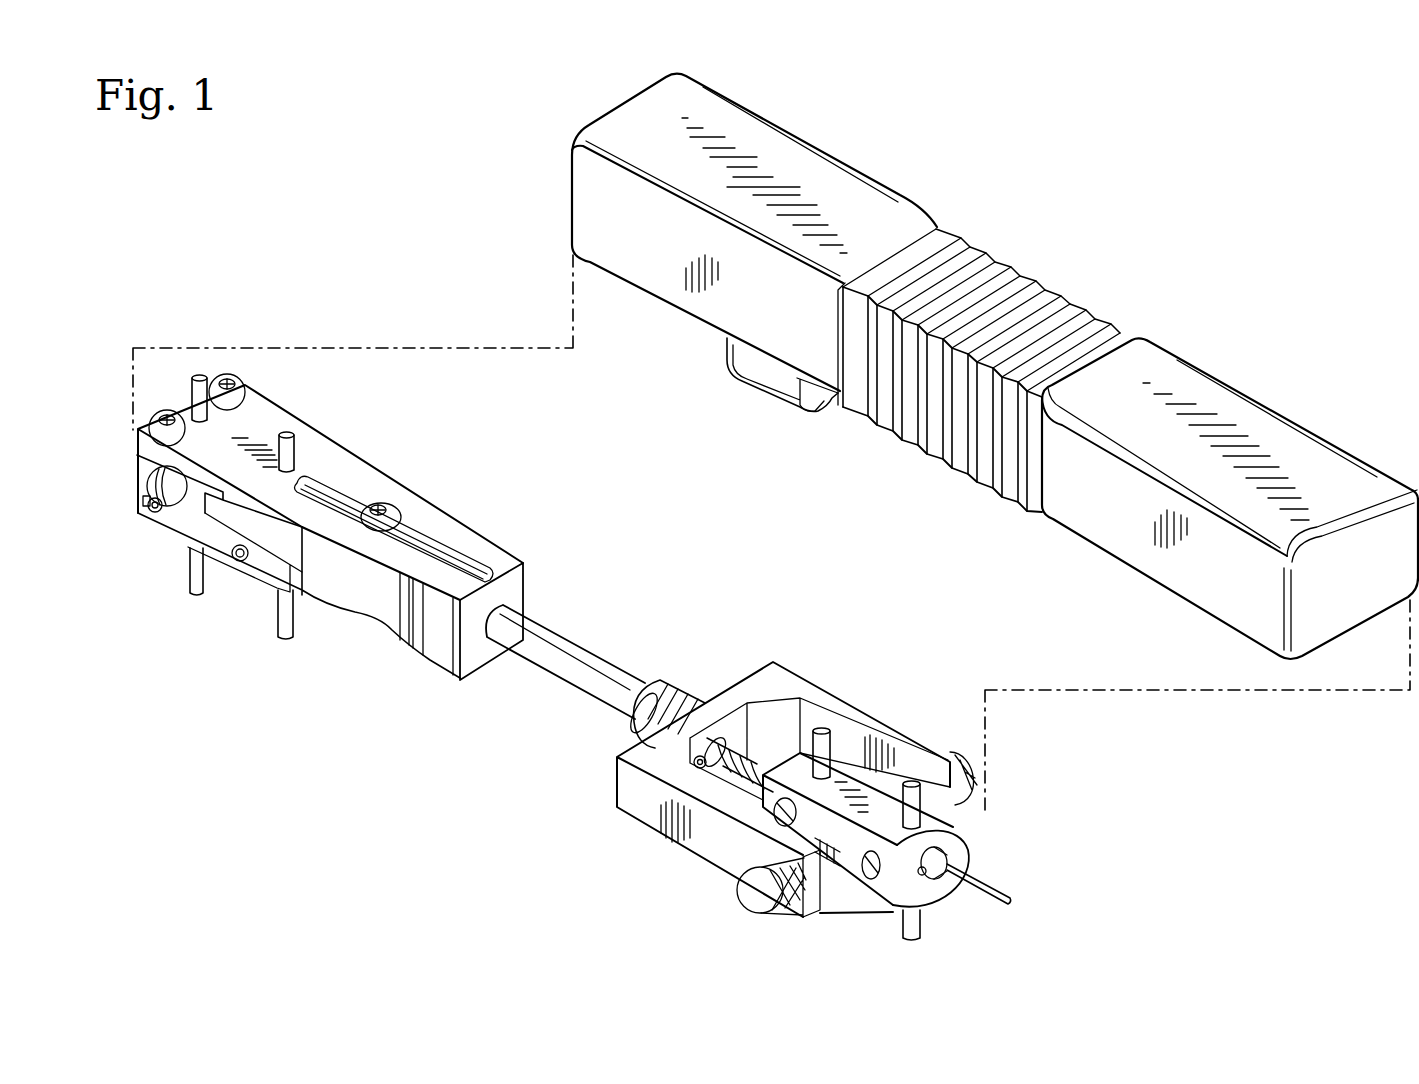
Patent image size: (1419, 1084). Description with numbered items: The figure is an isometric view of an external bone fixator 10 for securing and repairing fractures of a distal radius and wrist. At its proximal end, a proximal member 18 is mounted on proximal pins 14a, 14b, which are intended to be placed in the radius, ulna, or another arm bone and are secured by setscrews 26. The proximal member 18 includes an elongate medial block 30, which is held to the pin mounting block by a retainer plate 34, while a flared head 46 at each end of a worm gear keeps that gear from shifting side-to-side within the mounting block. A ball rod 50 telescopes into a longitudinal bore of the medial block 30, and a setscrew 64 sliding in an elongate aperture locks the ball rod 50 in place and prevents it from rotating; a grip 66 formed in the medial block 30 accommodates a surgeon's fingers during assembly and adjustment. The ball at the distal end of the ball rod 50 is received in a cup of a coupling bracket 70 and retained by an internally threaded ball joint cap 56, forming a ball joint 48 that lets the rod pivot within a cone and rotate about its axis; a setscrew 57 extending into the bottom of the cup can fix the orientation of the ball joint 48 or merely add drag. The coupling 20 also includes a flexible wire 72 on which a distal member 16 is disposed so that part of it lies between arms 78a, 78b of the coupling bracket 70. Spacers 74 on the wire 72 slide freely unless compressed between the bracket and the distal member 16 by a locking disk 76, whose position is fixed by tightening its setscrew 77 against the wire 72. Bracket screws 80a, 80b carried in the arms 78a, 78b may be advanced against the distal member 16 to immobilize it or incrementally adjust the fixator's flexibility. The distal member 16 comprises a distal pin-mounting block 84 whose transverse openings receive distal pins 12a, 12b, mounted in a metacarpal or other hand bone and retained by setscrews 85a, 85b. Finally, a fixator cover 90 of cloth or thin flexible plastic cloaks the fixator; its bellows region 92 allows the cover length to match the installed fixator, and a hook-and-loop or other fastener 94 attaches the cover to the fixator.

The external bone fixator 10 is at (241, 831).
The distal pin 12a is at (833, 740).
The distal pin 12b is at (928, 783).
The proximal pin 14a is at (190, 393).
The proximal pin 14b is at (297, 448).
The distal member 16 is at (1050, 819).
The proximal member 18 is at (547, 445).
The coupling 20 is at (1000, 658).
The setscrew 26 is at (150, 508).
The medial block 30 is at (313, 515).
The retainer plate 34 is at (284, 413).
The flared head 46 is at (143, 482).
The ball joint 48 is at (697, 665).
The ball rod 50 is at (567, 652).
The ball joint cap 56 is at (643, 722).
The setscrew 57 is at (697, 765).
The setscrew 64 is at (391, 514).
The grip 66 is at (521, 562).
The coupling bracket 70 is at (807, 680).
The wire 72 is at (1007, 898).
The spacers 74 is at (760, 764).
The locking disk 76 is at (960, 860).
The setscrew 77 is at (922, 877).
The arm 78a is at (650, 820).
The arm 78b is at (827, 698).
The bracket screw 80a is at (750, 897).
The bracket screw 80b is at (965, 750).
The distal pin-mounting block 84 is at (970, 833).
The setscrew 85a is at (773, 813).
The setscrew 85b is at (863, 877).
The fixator cover 90 is at (1208, 186).
The bellows region 92 is at (1020, 300).
The fastener 94 is at (825, 412).